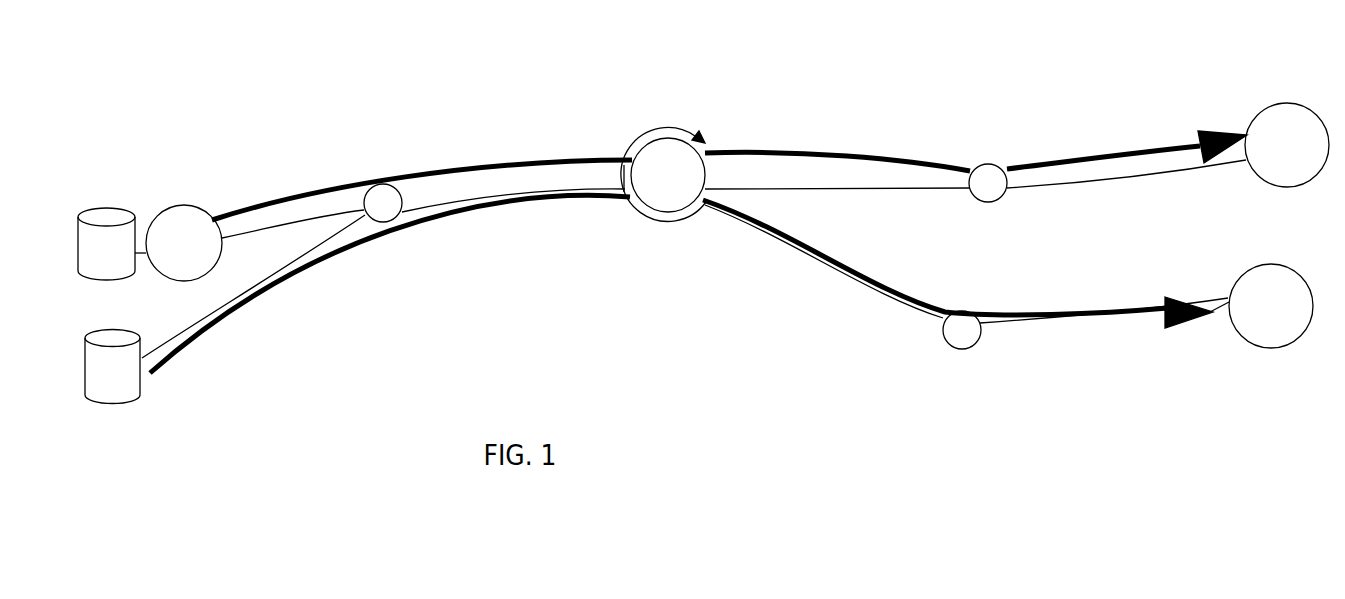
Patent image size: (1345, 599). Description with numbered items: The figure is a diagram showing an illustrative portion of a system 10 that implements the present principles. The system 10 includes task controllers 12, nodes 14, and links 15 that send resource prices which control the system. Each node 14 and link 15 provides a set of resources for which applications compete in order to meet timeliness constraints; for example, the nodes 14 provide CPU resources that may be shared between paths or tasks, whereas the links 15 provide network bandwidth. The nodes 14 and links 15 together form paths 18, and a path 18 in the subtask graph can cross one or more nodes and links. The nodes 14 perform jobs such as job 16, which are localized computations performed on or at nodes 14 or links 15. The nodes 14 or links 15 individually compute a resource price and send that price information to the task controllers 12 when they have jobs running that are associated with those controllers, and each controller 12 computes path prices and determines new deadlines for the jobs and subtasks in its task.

The system 10 is at (309, 38).
The task controller 12 is at (98, 206).
The node 14 is at (172, 206).
The link 15 is at (277, 227).
The job 16 is at (667, 128).
The path 18 is at (830, 155).